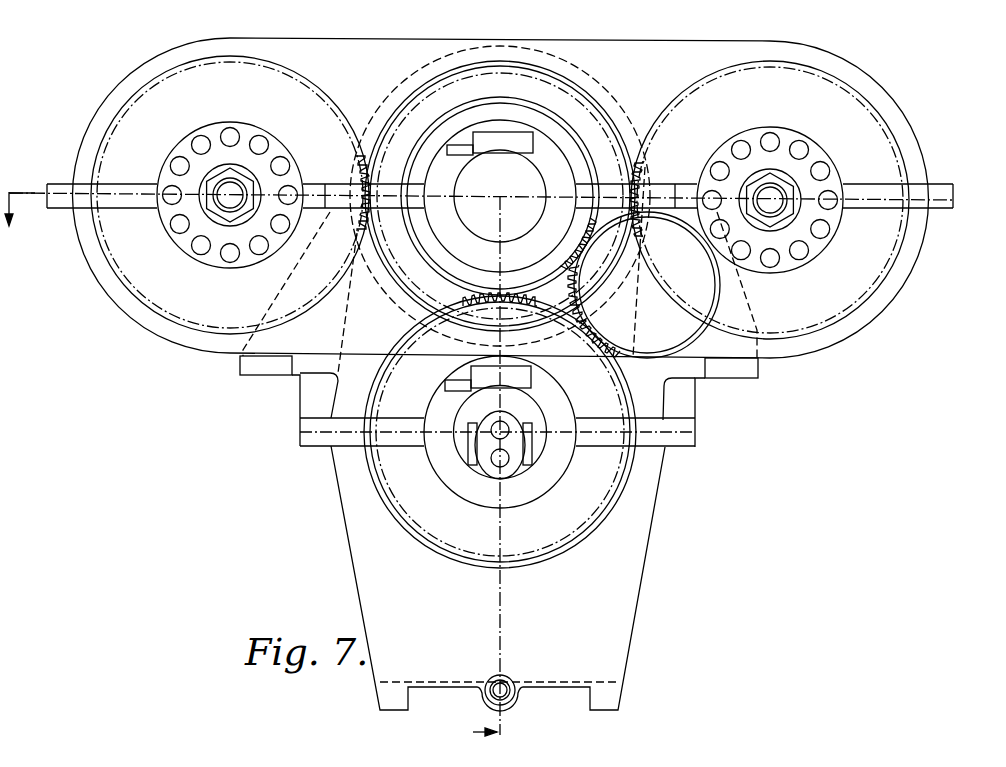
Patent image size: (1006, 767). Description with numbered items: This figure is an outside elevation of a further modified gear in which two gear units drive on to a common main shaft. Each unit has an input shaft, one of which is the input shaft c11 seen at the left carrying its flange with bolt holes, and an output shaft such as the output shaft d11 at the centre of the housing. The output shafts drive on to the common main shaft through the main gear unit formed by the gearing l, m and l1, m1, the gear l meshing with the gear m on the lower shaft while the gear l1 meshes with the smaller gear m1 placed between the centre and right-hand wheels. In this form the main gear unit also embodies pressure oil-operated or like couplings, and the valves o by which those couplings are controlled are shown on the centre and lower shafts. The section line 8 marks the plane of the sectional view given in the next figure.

The input shaft c11 is at (232, 192).
The output shaft d11 is at (517, 180).
The valve o is at (505, 132).
The gearing l is at (296, 196).
The gearing l1 is at (688, 196).
The gearing m is at (458, 298).
The gearing m1 is at (614, 357).
The section line 8 is at (261, 457).